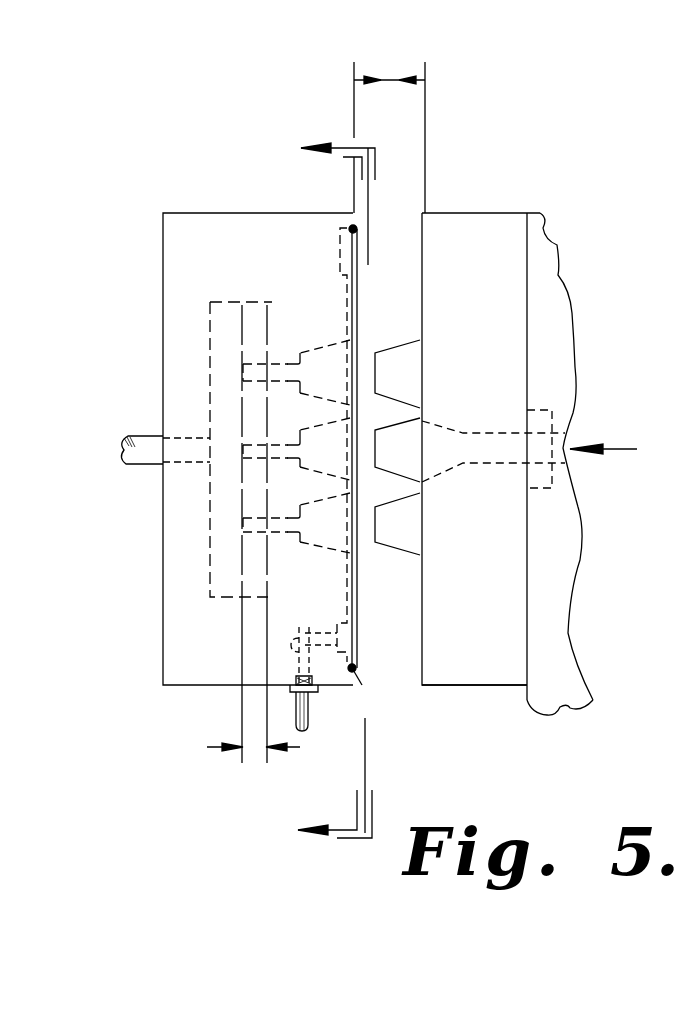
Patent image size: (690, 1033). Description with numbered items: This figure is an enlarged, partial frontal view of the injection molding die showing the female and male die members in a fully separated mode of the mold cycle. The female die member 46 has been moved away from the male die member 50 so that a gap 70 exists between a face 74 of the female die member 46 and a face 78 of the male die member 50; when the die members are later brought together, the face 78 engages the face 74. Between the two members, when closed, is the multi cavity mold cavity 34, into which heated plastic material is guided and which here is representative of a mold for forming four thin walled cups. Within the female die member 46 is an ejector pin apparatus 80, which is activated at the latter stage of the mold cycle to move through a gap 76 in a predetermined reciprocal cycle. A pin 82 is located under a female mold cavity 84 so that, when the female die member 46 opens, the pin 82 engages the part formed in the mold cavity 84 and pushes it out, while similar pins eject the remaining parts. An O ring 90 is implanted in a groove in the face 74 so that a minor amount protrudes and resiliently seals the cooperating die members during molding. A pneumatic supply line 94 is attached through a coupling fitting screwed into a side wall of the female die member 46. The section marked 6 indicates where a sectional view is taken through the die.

The female die member 46 is at (188, 216).
The male die member 50 is at (507, 212).
The multi cavity mold cavity 34 is at (362, 428).
The gap 70 is at (393, 80).
The ejector pin apparatus 80 is at (218, 412).
The pin 82 is at (287, 364).
The female mold cavity 84 is at (327, 355).
The O ring 90 is at (358, 290).
The pneumatic supply line 94 is at (310, 718).
The face 74 is at (354, 672).
The gap 76 is at (257, 750).
The face 78 is at (413, 672).
The section line 6- 6 is at (336, 490).